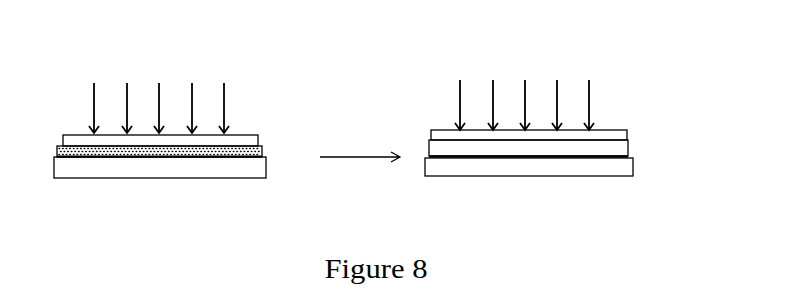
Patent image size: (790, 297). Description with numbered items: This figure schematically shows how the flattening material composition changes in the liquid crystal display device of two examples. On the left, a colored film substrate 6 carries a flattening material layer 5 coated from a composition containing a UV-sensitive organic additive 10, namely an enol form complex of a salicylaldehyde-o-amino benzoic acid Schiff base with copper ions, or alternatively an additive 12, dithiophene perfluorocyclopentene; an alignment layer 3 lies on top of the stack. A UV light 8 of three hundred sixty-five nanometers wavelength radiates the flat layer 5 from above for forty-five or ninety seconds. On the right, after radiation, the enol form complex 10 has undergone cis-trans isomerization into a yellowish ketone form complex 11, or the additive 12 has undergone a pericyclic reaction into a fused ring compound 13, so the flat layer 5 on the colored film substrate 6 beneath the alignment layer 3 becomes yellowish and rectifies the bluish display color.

The alignment layer 3 is at (228, 137).
The flattening material layer 5 is at (263, 155).
The colored film substrate 6 is at (225, 167).
The UV light 8 is at (225, 93).
The UV-sensitive organic additive 10 is at (193, 130).
The ketone form complex 11 is at (566, 136).
The UV-sensitive organic additive 12 is at (232, 148).
The fused ring compound 13 is at (613, 150).